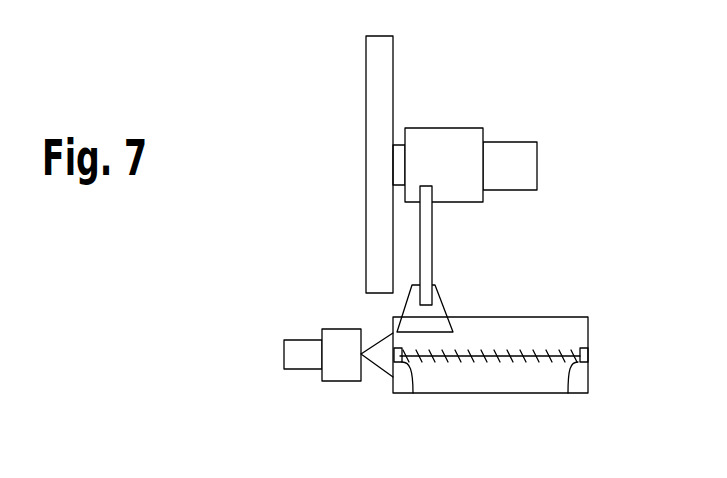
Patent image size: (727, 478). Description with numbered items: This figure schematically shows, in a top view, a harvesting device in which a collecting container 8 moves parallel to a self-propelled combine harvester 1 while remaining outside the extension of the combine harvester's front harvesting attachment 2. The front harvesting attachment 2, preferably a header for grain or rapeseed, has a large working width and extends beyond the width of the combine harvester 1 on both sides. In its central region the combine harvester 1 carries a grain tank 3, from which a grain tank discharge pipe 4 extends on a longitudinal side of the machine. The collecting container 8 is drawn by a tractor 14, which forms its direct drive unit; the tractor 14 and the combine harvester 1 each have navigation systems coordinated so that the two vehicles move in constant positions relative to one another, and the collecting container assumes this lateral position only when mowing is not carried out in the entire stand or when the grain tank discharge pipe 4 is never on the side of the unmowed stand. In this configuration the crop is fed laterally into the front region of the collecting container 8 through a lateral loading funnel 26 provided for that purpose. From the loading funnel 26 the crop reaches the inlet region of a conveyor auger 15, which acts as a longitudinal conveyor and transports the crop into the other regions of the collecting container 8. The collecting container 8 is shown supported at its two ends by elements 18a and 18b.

The self-propelled combine harvester 1 is at (434, 122).
The front harvesting attachment 2 is at (382, 139).
The grain tank 3 is at (463, 140).
The grain tank discharge pipe 4 is at (427, 216).
The collecting container 8 is at (592, 329).
The tractor 14 is at (345, 368).
The conveyor auger 15 is at (568, 353).
The bearing 18a is at (568, 393).
The bearing 18b is at (413, 393).
The lateral loading funnel 26 is at (437, 296).